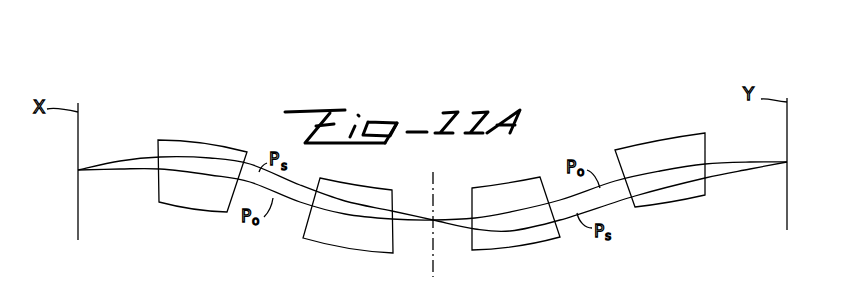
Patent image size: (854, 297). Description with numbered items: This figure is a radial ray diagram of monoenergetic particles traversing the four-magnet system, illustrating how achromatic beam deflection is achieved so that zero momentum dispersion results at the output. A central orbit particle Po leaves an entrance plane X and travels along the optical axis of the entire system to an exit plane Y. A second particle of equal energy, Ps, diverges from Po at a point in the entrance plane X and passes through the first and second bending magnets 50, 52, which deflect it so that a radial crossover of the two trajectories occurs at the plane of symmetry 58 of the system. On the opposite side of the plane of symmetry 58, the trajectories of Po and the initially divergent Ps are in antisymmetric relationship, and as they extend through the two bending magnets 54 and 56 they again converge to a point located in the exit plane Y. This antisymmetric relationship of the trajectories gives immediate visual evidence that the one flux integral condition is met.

The first bending magnet 50 is at (178, 142).
The second bending magnet 52 is at (333, 183).
The bending magnet 54 is at (497, 188).
The bending magnet 56 is at (662, 142).
The plane of symmetry 58 is at (432, 263).